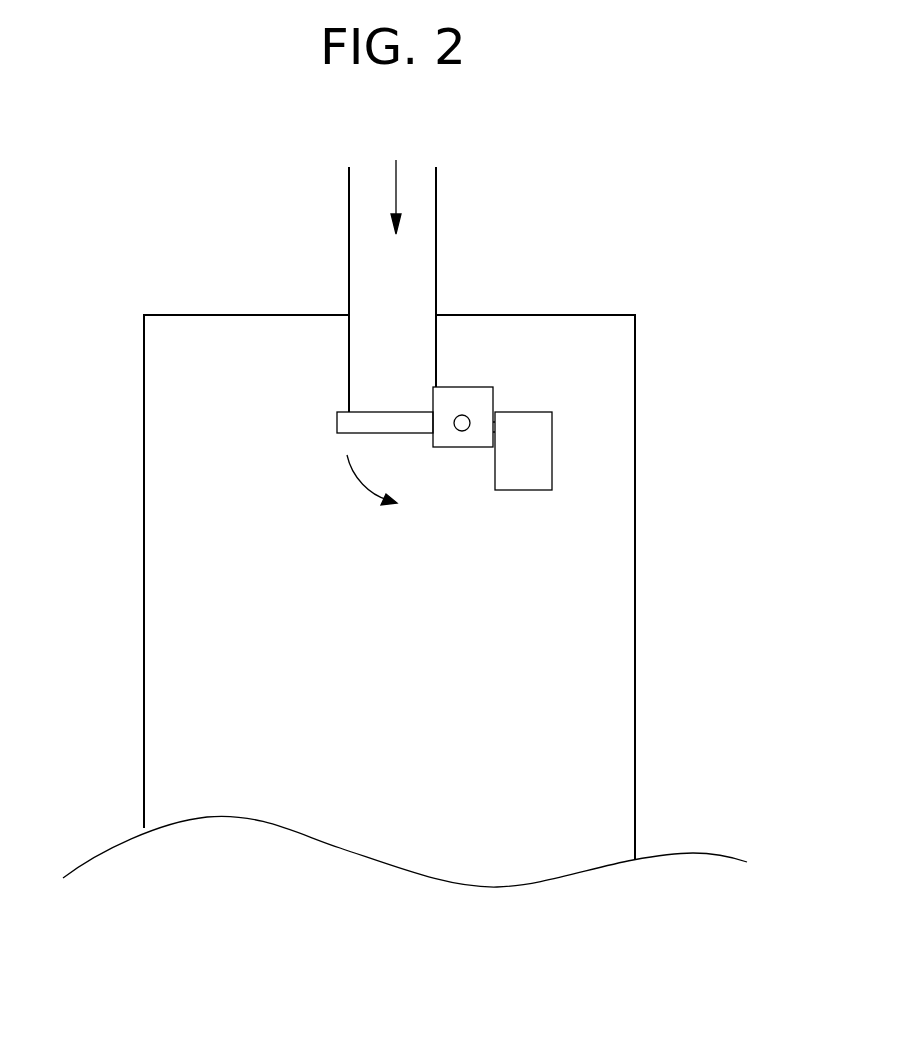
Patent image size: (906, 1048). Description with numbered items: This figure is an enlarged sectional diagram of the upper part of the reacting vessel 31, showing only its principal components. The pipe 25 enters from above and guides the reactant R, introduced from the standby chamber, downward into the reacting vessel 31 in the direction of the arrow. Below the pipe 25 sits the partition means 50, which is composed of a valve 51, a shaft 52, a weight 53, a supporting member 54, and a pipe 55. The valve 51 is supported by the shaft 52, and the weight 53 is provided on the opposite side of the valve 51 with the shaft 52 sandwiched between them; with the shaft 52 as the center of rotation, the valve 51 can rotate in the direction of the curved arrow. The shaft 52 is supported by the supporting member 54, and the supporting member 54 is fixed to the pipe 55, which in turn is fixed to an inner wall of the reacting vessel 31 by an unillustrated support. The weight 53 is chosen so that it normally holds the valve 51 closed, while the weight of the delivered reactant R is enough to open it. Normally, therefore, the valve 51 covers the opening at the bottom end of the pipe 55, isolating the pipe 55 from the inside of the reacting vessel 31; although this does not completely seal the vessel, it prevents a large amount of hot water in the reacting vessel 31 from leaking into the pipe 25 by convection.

The pipe 25 is at (436, 228).
The reacting vessel 31 is at (635, 518).
The partition means 50 is at (440, 502).
The valve 51 is at (336, 424).
The shaft 52 is at (462, 431).
The weight 53 is at (553, 428).
The supporting member 54 is at (478, 387).
The pipe 55 is at (348, 358).
The reactant R is at (396, 168).